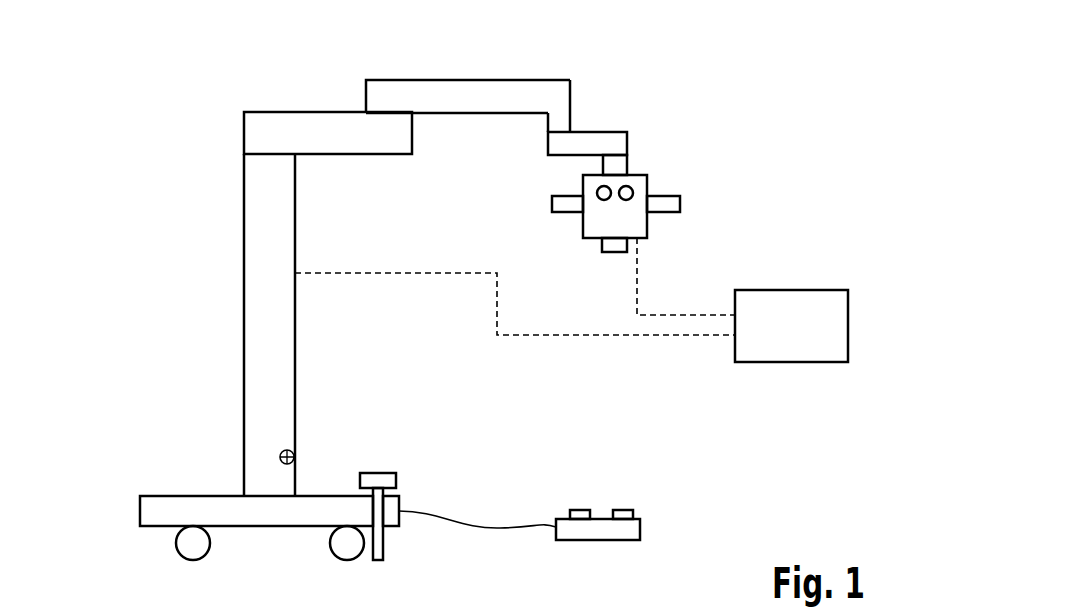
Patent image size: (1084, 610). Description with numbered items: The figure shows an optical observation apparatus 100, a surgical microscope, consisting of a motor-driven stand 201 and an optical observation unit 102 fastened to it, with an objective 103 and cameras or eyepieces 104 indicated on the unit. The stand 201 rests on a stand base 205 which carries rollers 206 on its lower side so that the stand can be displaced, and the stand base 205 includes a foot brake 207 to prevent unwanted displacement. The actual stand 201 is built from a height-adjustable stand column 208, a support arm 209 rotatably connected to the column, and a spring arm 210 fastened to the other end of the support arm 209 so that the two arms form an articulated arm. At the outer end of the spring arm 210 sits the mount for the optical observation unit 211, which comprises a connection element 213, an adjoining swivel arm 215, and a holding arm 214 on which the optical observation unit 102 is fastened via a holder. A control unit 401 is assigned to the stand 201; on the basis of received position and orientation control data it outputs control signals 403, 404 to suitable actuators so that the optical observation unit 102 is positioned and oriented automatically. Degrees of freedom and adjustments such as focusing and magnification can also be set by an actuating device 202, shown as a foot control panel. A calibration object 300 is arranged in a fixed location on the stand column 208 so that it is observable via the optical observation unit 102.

The optical observation apparatus 100 is at (310, 93).
The stand 201 is at (190, 126).
The actuating device 202 is at (600, 515).
The stand base 205 is at (173, 495).
The rollers 206 is at (176, 542).
The foot brake 207 is at (378, 473).
The stand column 208 is at (243, 323).
The support arm 209 is at (375, 155).
The spring arm 210 is at (472, 80).
The mount for the optical observation unit 211 is at (695, 81).
The connection element 213 is at (558, 80).
The holding arm 214 is at (628, 163).
The swivel arm 215 is at (605, 132).
The optical observation unit 102 is at (650, 229).
The objective 103 is at (615, 253).
The cameras / eyepieces 104 is at (597, 192).
The calibration object 300 is at (287, 446).
The control unit 401 is at (792, 367).
The control signals 403 is at (542, 337).
The control signals 404 is at (673, 315).